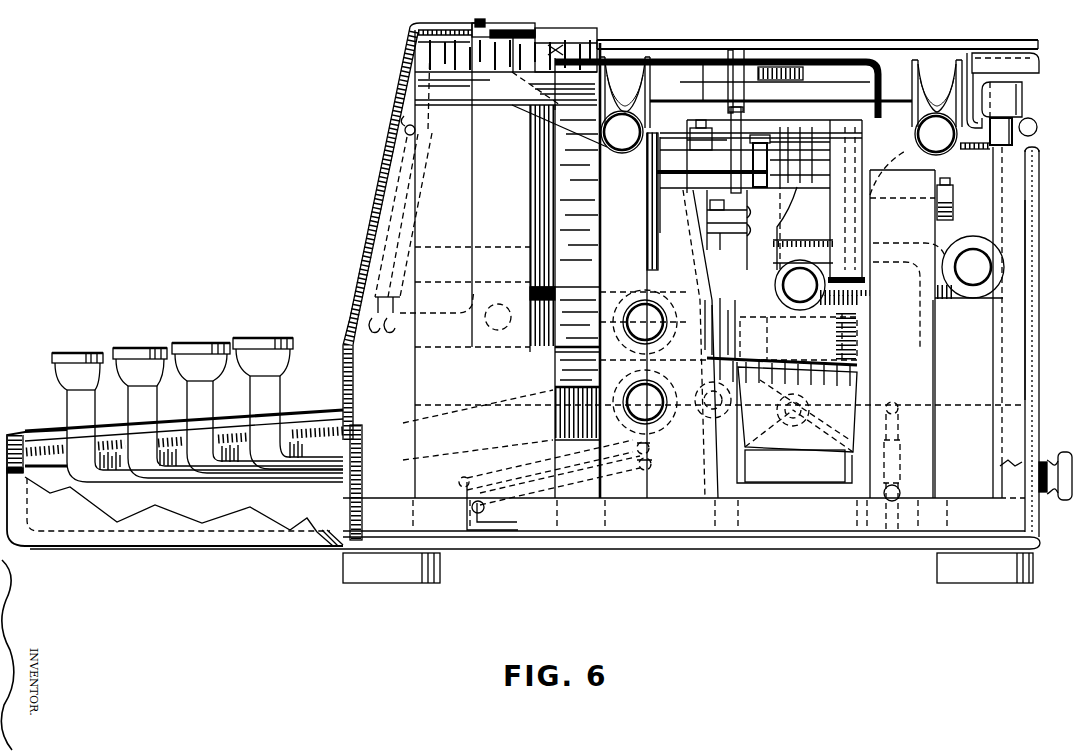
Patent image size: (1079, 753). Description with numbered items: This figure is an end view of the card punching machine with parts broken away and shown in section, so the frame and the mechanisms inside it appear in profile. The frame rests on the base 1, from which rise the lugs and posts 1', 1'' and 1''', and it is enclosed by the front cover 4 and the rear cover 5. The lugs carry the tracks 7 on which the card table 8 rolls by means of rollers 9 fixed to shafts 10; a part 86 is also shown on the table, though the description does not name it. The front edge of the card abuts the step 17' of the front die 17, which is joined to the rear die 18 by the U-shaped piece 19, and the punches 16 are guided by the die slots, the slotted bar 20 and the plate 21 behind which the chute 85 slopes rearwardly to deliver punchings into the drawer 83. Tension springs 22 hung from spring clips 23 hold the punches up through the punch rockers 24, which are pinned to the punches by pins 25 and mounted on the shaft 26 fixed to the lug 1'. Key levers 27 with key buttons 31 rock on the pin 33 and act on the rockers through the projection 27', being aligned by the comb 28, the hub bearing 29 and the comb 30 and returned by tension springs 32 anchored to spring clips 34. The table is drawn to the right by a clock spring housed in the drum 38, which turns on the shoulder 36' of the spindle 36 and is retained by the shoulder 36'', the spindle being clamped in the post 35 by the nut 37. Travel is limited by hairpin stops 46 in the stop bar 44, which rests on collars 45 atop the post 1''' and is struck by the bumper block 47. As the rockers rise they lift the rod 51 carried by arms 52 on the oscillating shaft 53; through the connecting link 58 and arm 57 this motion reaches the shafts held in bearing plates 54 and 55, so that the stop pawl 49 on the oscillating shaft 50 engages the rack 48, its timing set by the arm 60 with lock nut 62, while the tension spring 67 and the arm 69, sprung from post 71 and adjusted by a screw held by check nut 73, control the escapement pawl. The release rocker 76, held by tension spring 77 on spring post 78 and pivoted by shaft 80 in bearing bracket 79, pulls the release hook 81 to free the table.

The base 1 is at (535, 540).
The lug 1' is at (612, 315).
The post 1'' is at (399, 264).
The post 1''' is at (1040, 300).
The front cover 4 is at (355, 285).
The rear cover 5 is at (1039, 212).
The tracks 7 is at (779, 133).
The card table 8 is at (840, 40).
The rollers 9 is at (618, 72).
The shafts 10 is at (834, 94).
The punches 16 is at (502, 29).
The front die 17 is at (420, 41).
The step 17' is at (487, 13).
The rear die 18 is at (565, 52).
The U-shaped piece 19 is at (488, 100).
The slotted bar 20 is at (452, 247).
The plate 21 is at (538, 205).
The tension springs 22 is at (385, 252).
The spring clips 23 is at (410, 112).
The punch rockers 24 is at (450, 347).
The pins 25 is at (497, 330).
The shaft 26 is at (640, 305).
The key levers 27 is at (184, 454).
The projection 27' is at (665, 387).
The comb 28 is at (737, 469).
The hub bearing 29 is at (625, 385).
The comb 30 is at (355, 482).
The key buttons 31 is at (54, 351).
The tension springs 32 is at (613, 477).
The pin 33 is at (655, 446).
The spring clips 34 is at (470, 510).
The post 35 is at (932, 372).
The spindle 36 is at (919, 332).
The shoulder 36' is at (890, 172).
The shoulder 36'' is at (901, 288).
The nut 37 is at (953, 195).
The drum 38 is at (801, 335).
The stop bar 44 is at (1024, 92).
The collars 45 is at (1037, 128).
The hairpin stops 46 is at (1039, 62).
The bumper block 47 is at (995, 53).
The rack 48 is at (728, 72).
The stop pawl 49 is at (758, 135).
The oscillating shaft 50 is at (665, 163).
The rod 51 is at (792, 286).
The arms 52 is at (944, 300).
The oscillating shaft 53 is at (973, 256).
The bearing plate 54 is at (775, 243).
The bearing plate 55 is at (650, 198).
The arm 57 is at (826, 140).
The connecting link 58 is at (778, 263).
The arm 60 is at (726, 150).
The lock nut 62 is at (690, 135).
The tension spring 67 is at (718, 214).
The arm 69 is at (752, 201).
The post 71 is at (723, 236).
The check nut 73 is at (786, 136).
The rocker 76 is at (878, 398).
The tension spring 77 is at (902, 462).
The spring post 78 is at (901, 505).
The bearing bracket 79 is at (827, 475).
The shaft 80 is at (790, 447).
The release hook 81 is at (707, 286).
The drawer 83 is at (1040, 447).
The chute 85 is at (568, 172).
The pad 86 is at (783, 66).